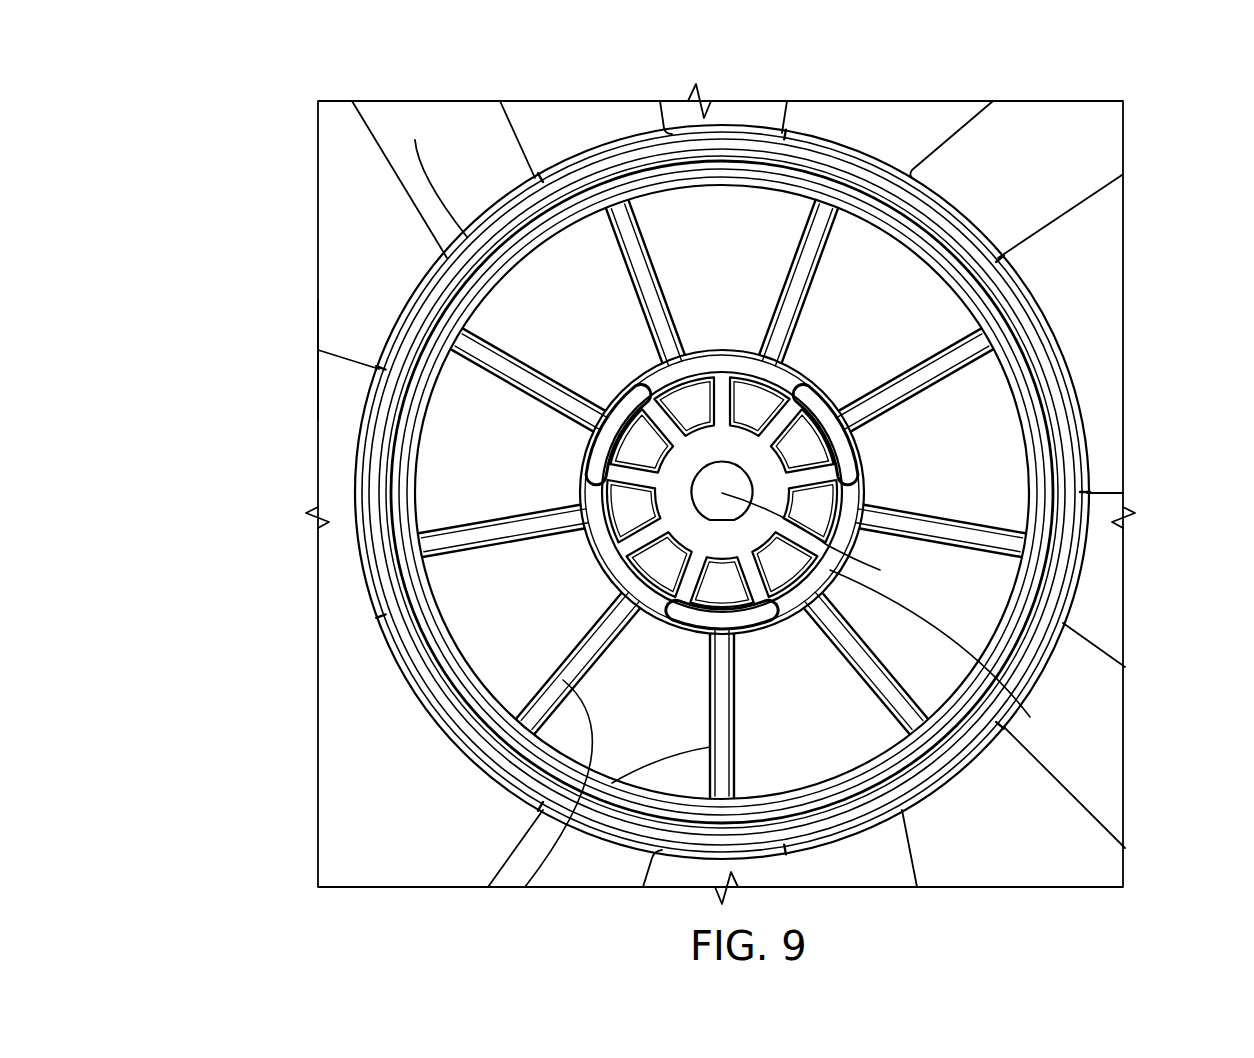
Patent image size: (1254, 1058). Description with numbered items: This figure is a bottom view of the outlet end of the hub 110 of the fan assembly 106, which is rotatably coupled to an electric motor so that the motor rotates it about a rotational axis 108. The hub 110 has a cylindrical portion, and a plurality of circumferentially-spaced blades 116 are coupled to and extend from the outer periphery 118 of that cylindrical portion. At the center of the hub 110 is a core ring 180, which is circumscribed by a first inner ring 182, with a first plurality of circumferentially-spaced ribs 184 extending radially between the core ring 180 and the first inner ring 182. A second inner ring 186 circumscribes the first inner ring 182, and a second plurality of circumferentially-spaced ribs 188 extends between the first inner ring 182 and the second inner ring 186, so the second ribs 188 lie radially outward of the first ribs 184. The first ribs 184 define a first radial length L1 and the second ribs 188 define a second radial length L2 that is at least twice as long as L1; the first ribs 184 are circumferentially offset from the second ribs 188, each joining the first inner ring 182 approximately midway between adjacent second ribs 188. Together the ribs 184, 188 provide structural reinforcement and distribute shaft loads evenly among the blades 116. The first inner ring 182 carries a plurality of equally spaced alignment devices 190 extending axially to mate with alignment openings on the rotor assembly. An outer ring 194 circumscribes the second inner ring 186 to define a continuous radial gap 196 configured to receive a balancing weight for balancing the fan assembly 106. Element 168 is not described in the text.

The fan assembly 106 is at (272, 126).
The rotational axis 108 is at (830, 568).
The hub 110 is at (711, 535).
The blades 116 is at (322, 262).
The outer periphery 118 is at (415, 140).
The hub wall 168 is at (600, 481).
The core ring 180 is at (746, 458).
The first inner ring 182 is at (1000, 687).
The first plurality of circumferentially-spaced ribs 184 is at (655, 607).
The second inner ring 186 is at (417, 598).
The second plurality of circumferentially-spaced ribs 188 is at (690, 632).
The alignment device 190 is at (580, 450).
The outer ring 194 is at (420, 683).
The radial gap 196 is at (390, 649).
The first radial length L1 is at (777, 455).
The second radial length L2 is at (1002, 515).